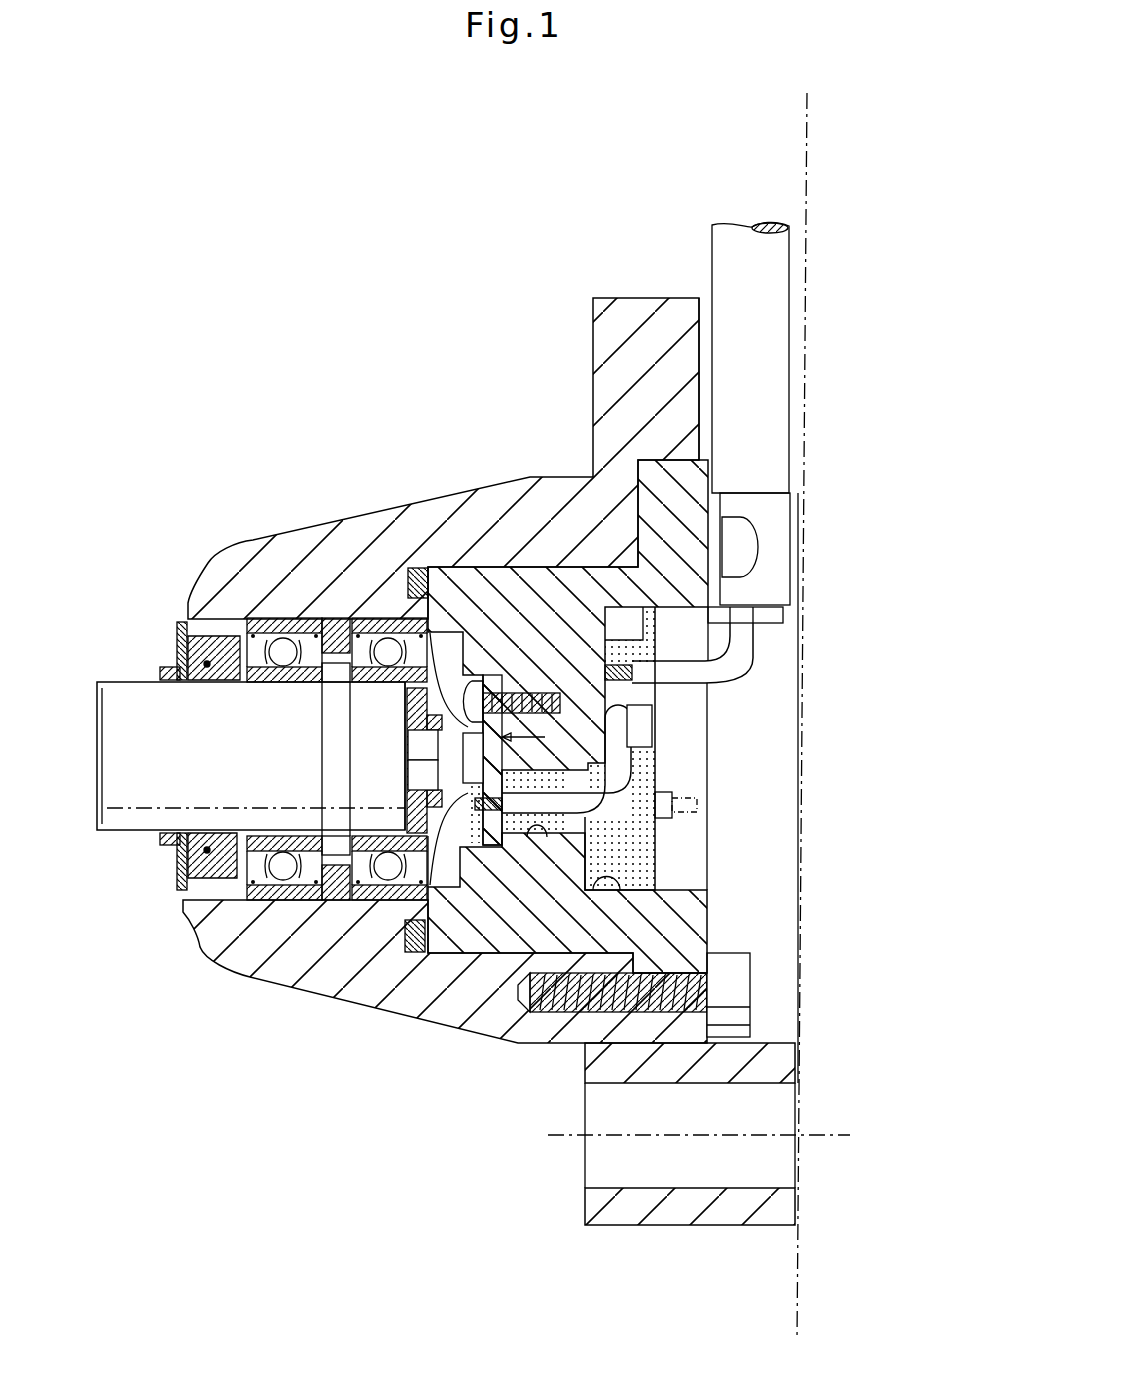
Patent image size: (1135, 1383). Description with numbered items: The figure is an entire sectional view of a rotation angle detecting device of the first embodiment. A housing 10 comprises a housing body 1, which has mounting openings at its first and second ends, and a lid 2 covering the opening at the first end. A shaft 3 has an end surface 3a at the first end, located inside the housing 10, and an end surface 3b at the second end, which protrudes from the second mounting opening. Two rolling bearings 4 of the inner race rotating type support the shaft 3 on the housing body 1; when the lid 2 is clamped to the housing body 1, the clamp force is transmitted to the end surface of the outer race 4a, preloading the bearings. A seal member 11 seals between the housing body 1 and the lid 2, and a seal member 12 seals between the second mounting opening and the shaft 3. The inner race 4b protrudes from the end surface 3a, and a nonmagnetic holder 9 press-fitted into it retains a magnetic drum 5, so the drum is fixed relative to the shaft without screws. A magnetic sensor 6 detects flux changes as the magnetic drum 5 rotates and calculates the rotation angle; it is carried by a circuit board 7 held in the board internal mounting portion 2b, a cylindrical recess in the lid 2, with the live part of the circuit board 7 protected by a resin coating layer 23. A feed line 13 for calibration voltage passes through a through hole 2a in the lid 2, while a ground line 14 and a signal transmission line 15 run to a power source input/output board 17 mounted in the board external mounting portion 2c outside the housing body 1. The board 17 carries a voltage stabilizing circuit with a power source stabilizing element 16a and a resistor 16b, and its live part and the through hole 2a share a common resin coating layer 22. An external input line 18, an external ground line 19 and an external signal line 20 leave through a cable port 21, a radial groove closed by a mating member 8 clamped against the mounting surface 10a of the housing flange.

The housing body 1 is at (305, 548).
The lid 2 is at (639, 863).
The through hole 2a is at (520, 838).
The board internal mounting portion 2b is at (465, 850).
The board external mounting portion 2c is at (612, 852).
The shaft 3 is at (236, 794).
The end surface 3a is at (410, 723).
The end surface 3b is at (97, 770).
The rolling bearings 4 is at (319, 660).
The outer race 4a is at (390, 630).
The inner race 4b is at (337, 759).
The magnetic drum 5 is at (347, 840).
The magnetic sensor 6 is at (391, 864).
The circuit board 7 is at (620, 762).
The mating member 8 is at (805, 131).
The holder 9 is at (376, 902).
The housing 10 is at (656, 652).
The mounting surface 10a is at (805, 330).
The seal member 11 is at (413, 953).
The seal member 12 is at (197, 663).
The feed line 13 is at (702, 766).
The ground line 14 is at (702, 766).
The signal transmission line 15 is at (652, 765).
The power source stabilizing element 16a is at (632, 625).
The resistor 16b is at (640, 720).
The power source input/output board 17 is at (605, 696).
The external input line 18 is at (833, 633).
The external ground line 19 is at (833, 633).
The external signal line 20 is at (730, 660).
The cable port 21 is at (715, 358).
The resin coating layer 22 is at (633, 860).
The resin coating layer 23 is at (462, 740).